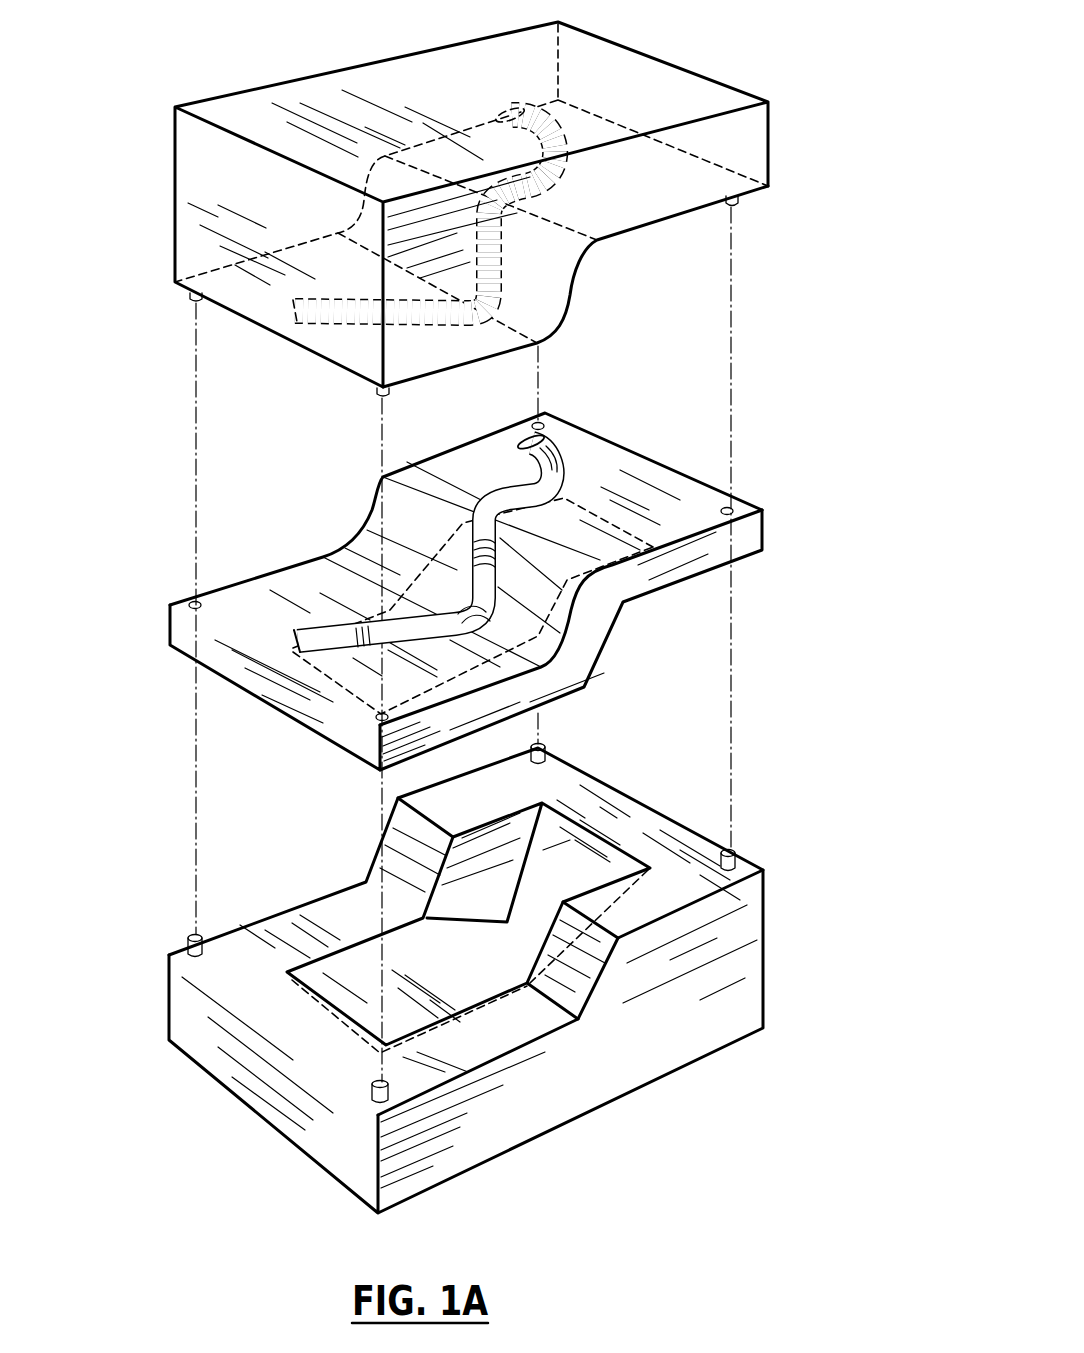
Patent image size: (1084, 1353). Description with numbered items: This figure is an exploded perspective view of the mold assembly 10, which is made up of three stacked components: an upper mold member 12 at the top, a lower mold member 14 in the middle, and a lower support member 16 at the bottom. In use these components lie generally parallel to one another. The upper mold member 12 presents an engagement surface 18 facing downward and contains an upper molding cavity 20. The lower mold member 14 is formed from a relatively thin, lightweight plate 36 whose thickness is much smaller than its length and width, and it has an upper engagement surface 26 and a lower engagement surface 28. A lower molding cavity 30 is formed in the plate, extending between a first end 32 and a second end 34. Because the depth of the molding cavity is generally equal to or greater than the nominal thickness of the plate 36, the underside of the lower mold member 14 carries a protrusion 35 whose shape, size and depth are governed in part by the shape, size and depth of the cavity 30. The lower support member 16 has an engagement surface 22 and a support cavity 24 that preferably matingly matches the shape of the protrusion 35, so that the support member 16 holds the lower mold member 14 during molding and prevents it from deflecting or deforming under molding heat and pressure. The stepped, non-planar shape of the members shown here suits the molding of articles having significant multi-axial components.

The mold assembly 10 is at (752, 325).
The upper mold member 12 is at (490, 198).
The lower mold member 14 is at (491, 572).
The lower support member 16 is at (508, 973).
The engagement surface 18 is at (676, 218).
The upper molding cavity 20 is at (500, 122).
The engagement surface 22 is at (687, 845).
The support cavity 24 is at (590, 852).
The upper engagement surface 26 is at (648, 488).
The lower engagement surface 28 is at (675, 586).
The lower molding cavity 30 is at (444, 513).
The end of lower molding cavity 32 is at (552, 437).
The end of lower molding cavity 34 is at (298, 641).
The protrusion 35 is at (586, 676).
The plate 36 is at (333, 731).